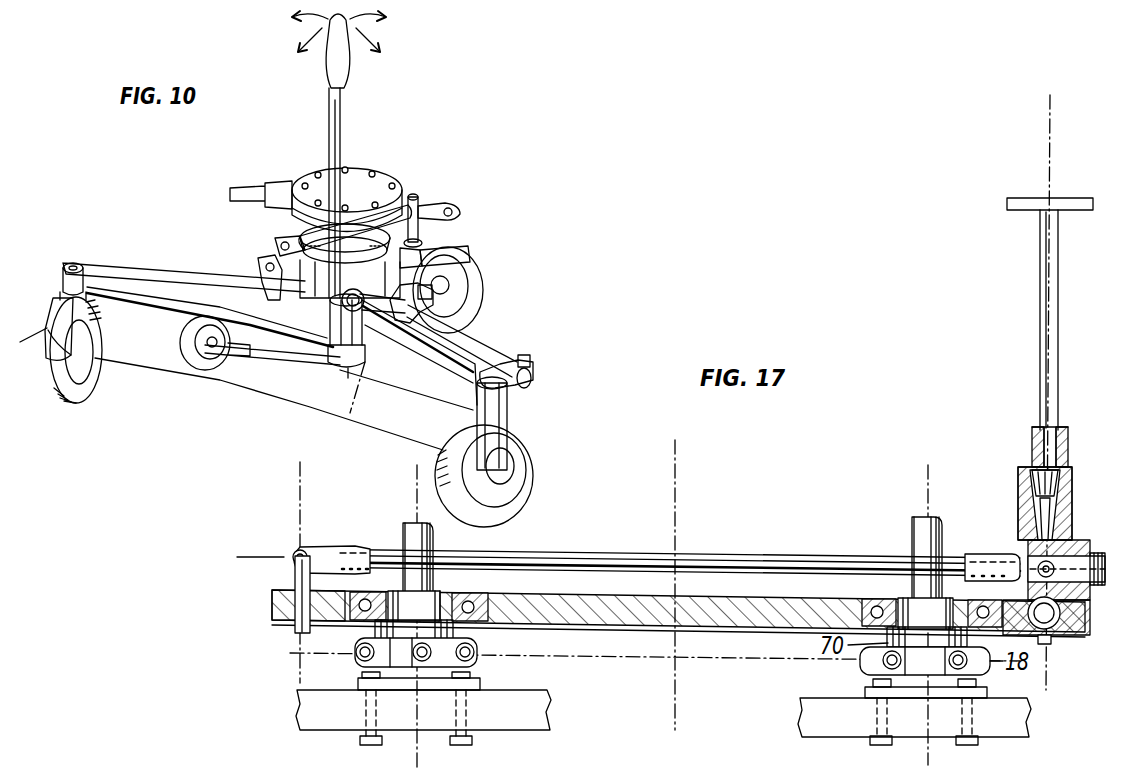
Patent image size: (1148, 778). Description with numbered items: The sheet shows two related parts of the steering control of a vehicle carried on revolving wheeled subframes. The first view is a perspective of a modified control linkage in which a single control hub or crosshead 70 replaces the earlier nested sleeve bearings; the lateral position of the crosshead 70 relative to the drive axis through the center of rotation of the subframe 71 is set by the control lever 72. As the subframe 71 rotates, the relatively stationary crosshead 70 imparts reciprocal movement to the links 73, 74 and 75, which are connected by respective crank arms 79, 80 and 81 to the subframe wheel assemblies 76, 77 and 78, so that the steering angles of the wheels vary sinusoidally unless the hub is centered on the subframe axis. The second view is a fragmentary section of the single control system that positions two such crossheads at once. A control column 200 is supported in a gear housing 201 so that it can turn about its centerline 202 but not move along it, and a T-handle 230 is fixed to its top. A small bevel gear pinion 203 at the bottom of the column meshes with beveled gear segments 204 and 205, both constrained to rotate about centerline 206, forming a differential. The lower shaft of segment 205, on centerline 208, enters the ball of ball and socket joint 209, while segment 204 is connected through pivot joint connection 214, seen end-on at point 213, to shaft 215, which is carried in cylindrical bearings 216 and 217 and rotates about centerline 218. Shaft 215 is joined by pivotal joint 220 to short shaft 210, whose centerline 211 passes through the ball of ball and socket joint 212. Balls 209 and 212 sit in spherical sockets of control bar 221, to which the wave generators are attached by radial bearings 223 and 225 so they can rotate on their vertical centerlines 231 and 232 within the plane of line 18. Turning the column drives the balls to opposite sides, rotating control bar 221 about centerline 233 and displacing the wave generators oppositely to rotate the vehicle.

In FIG. 17, the line 18— 18 is at (355, 654).
In FIG. 10, the control hub or crosshead 70 is at (300, 258).
In FIG. 17, the control hub or crosshead 70 is at (446, 643).
In FIG. 10, the subframe 71 is at (407, 358).
In FIG. 10, the control lever 72 is at (341, 124).
In FIG. 10, the link 73 is at (470, 334).
In FIG. 10, the link 74 is at (212, 290).
In FIG. 10, the link 75 is at (410, 200).
In FIG. 10, the subframe wheel assembly 76 is at (490, 496).
In FIG. 10, the subframe wheel assembly 77 is at (60, 373).
In FIG. 10, the subframe wheel assembly 78 is at (462, 254).
In FIG. 10, the crank arm 79 is at (512, 362).
In FIG. 10, the crank arm 80 is at (75, 262).
In FIG. 10, the crank arm 81 is at (444, 204).
In FIG. 17, the control column 200 is at (1042, 269).
In FIG. 17, the gear housing 201 is at (1060, 436).
In FIG. 17, the centerline 202 is at (1052, 148).
In FIG. 17, the small bevel gear pinion 203 is at (1036, 486).
In FIG. 17, the beveled gear segment 204 is at (1032, 510).
In FIG. 17, the beveled gear segment 205 is at (1066, 500).
In FIG. 17, the centerline 206 is at (1125, 566).
In FIG. 17, the centerline 208 is at (1046, 672).
In FIG. 17, the ball and socket joint 209 is at (1080, 612).
In FIG. 17, the short shaft 210 is at (290, 600).
In FIG. 17, the centerline 211 is at (300, 511).
In FIG. 17, the ball and socket joint 212 is at (284, 598).
In FIG. 17, the point 213 is at (1056, 562).
In FIG. 17, the pivot joint connection 214 is at (1030, 556).
In FIG. 17, the shaft 215 is at (617, 562).
In FIG. 17, the cylindrical bearing 216 is at (980, 556).
In FIG. 17, the cylindrical bearing 217 is at (353, 547).
In FIG. 17, the centerline 218 is at (272, 559).
In FIG. 17, the pivotal joint 220 is at (294, 552).
In FIG. 17, the control bar 221 is at (615, 624).
In FIG. 17, the radial bearing 223 is at (473, 607).
In FIG. 17, the radial bearing 225 is at (874, 607).
In FIG. 17, the T-handle 230 is at (1066, 206).
In FIG. 17, the vertical rotational centerline 231 is at (416, 491).
In FIG. 17, the vertical rotational centerline 232 is at (928, 758).
In FIG. 17, the centerline 233 is at (677, 504).